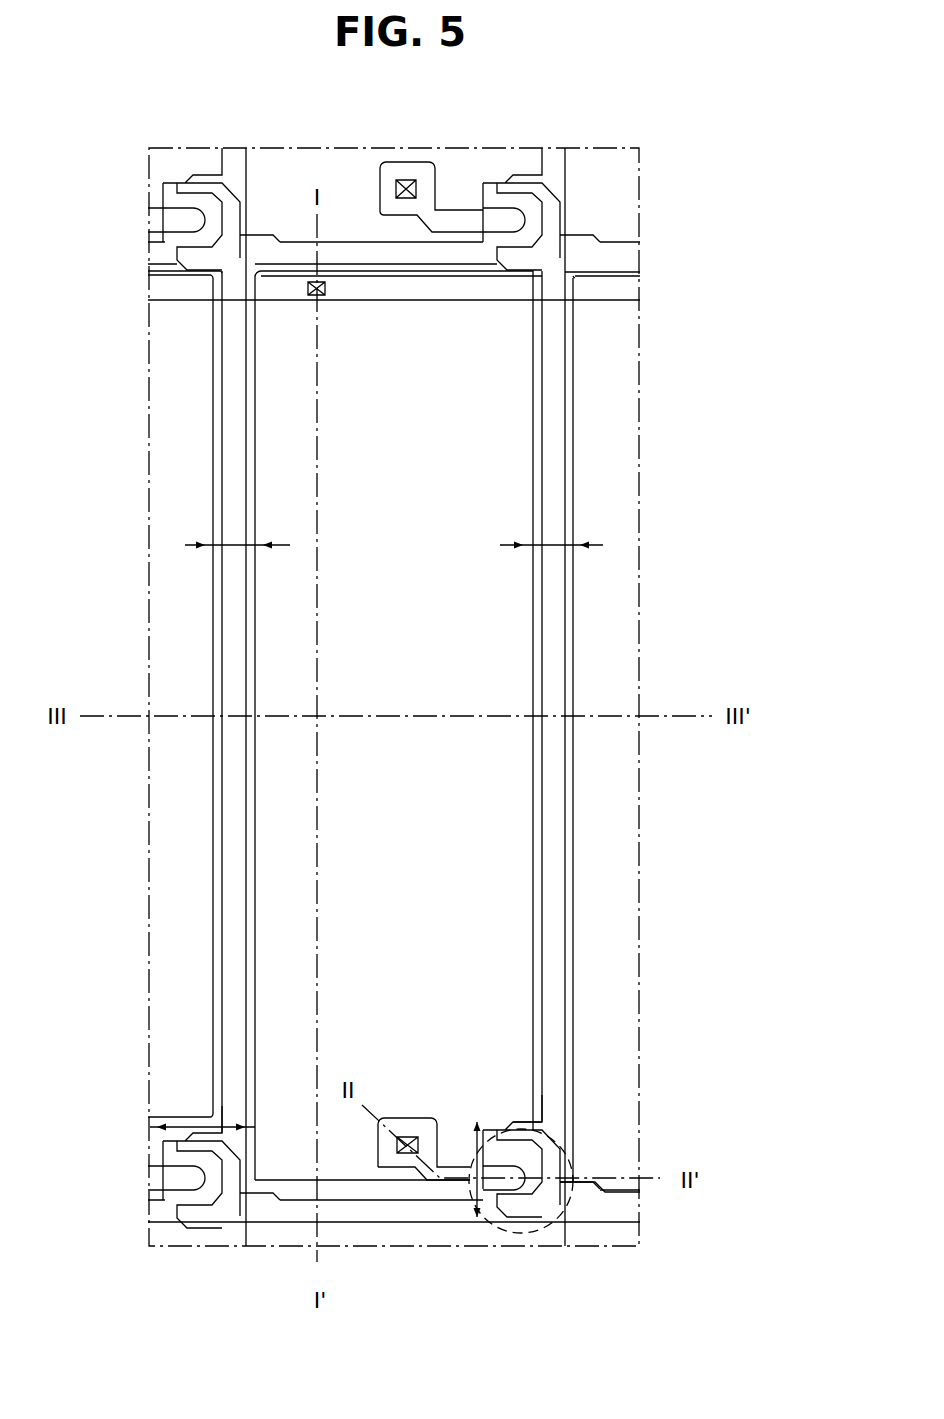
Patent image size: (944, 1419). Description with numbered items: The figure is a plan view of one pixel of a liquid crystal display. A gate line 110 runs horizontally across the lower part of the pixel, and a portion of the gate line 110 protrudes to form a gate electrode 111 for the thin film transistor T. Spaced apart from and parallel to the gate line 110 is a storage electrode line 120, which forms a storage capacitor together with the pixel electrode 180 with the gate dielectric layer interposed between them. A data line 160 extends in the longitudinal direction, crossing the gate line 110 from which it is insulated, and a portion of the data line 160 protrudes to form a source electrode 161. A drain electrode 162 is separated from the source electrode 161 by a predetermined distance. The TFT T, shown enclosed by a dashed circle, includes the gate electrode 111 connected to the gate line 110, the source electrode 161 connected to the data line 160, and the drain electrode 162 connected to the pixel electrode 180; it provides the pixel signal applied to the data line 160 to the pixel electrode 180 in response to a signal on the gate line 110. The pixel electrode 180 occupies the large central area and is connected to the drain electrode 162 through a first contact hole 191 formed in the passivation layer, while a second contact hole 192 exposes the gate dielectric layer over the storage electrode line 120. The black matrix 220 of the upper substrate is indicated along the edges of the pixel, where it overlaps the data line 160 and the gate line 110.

The gate line 110 is at (622, 256).
The gate electrode 111 is at (478, 1225).
The storage electrode line 120 is at (622, 288).
The data line 160 is at (556, 165).
The source electrode 161 is at (545, 1120).
The drain electrode 162 is at (455, 1185).
The pixel electrode 180 is at (290, 360).
The first contact hole 191 is at (392, 1143).
The second contact hole 192 is at (319, 280).
The black matrix 220 is at (233, 543).
The TFT T is at (565, 1235).